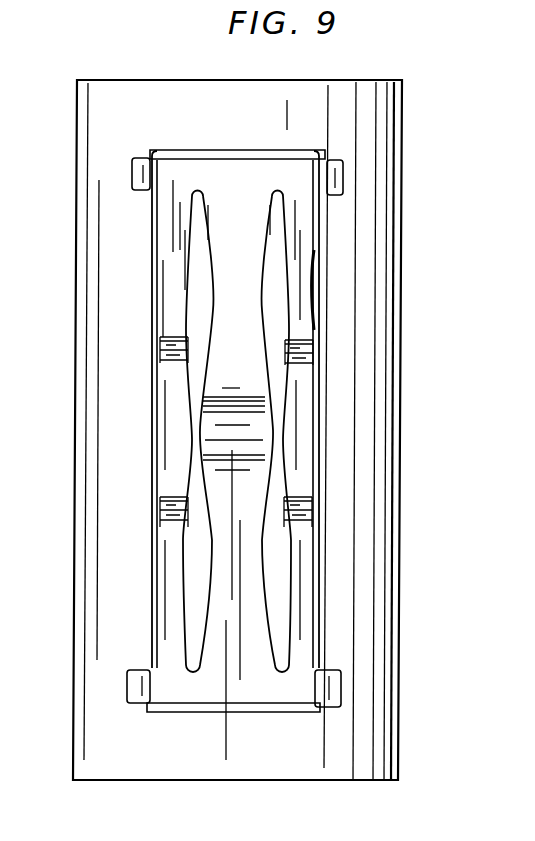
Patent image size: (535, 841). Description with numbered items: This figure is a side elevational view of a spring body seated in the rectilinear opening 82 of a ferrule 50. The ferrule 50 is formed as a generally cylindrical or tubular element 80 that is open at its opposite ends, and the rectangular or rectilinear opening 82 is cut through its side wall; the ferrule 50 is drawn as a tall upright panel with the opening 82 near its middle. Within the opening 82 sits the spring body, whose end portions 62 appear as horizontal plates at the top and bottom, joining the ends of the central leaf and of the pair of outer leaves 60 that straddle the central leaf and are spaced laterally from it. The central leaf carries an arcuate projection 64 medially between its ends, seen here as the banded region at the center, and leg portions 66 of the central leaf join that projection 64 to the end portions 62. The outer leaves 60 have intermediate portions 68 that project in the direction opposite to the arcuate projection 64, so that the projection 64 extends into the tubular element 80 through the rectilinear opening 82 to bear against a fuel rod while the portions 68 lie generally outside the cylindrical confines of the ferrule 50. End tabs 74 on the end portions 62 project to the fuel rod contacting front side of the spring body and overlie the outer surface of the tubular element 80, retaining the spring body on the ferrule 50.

The ferrule 50 is at (397, 653).
The outer leaves 60 is at (172, 558).
The end portions 62 is at (220, 175).
The arcuate projection 64 is at (228, 427).
The leg portions 66 is at (228, 258).
The intermediate portions 68 is at (167, 390).
The end tabs 74 is at (138, 170).
The tubular element 80 is at (355, 698).
The rectilinear opening 82 is at (318, 263).